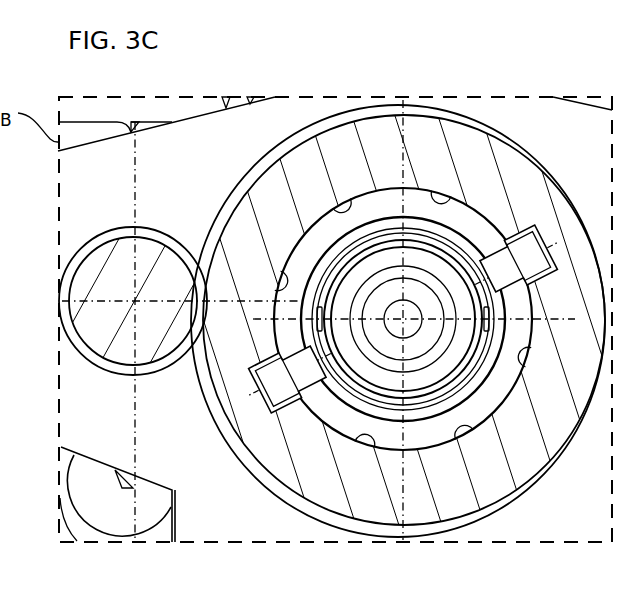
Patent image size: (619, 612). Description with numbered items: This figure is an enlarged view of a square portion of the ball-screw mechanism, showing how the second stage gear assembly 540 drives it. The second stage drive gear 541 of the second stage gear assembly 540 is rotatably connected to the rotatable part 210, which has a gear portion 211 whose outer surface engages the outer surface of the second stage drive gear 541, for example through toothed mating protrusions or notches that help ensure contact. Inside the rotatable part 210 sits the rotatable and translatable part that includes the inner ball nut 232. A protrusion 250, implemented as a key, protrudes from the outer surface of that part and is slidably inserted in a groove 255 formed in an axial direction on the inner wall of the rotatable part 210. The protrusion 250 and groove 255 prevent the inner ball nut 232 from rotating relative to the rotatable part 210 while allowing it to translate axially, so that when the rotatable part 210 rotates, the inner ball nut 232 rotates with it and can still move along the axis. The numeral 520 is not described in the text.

The rotatable part 210 is at (302, 450).
The gear portion 211 is at (447, 508).
The inner ball nut 232 is at (382, 430).
The protrusion 250 is at (517, 248).
The groove 255 is at (545, 243).
The second stage gear assembly 540 is at (87, 510).
The connector 520 is at (117, 494).
The second stage drive gear 541 is at (102, 277).